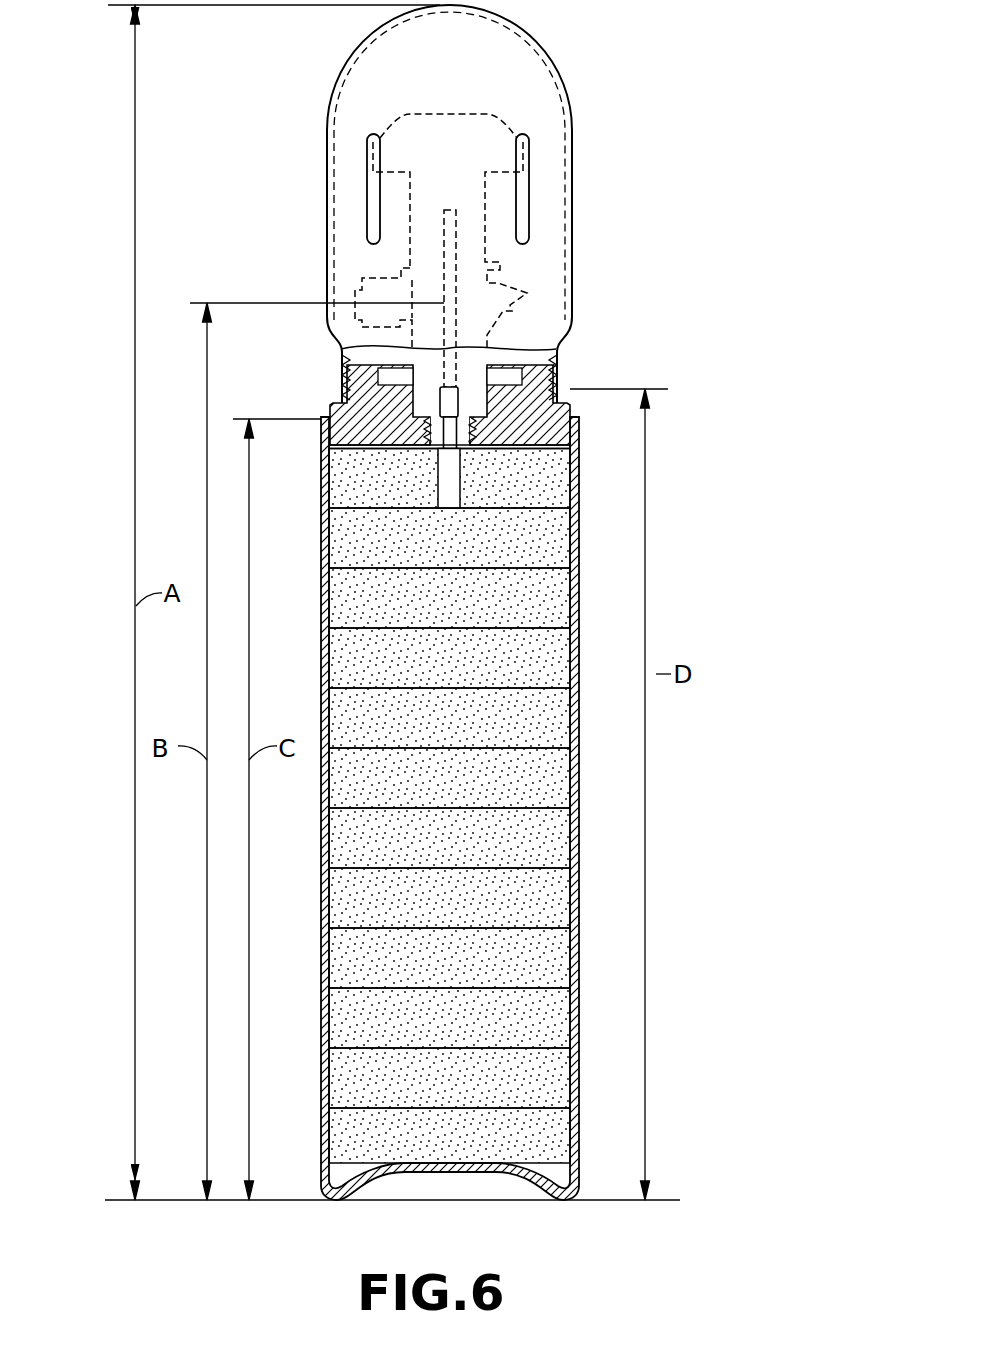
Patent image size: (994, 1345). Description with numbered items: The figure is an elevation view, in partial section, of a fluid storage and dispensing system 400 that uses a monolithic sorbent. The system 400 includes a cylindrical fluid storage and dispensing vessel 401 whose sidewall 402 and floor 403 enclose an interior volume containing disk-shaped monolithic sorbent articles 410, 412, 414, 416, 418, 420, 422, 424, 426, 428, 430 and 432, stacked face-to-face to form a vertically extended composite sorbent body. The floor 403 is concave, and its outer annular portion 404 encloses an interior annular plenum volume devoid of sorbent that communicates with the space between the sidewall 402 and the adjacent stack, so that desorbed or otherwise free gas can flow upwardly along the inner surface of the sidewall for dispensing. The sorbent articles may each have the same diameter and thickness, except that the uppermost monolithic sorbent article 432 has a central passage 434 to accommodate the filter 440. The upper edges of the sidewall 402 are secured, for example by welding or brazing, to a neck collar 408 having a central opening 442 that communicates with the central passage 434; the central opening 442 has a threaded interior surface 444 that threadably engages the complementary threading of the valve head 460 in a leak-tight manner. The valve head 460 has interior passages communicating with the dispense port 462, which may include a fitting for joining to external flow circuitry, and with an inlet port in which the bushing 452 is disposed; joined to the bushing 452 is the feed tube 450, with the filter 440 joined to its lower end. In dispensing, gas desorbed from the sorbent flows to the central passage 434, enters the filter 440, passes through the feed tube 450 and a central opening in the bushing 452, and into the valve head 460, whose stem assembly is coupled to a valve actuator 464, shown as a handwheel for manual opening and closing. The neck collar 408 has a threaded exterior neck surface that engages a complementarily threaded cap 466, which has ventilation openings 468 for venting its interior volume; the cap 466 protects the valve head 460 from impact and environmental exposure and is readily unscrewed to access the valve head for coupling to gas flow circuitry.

The fluid storage and dispensing system 400 is at (690, 182).
The fluid storage and dispensing vessel 401 is at (323, 1082).
The sidewall 402 is at (323, 693).
The floor 403 is at (427, 1170).
The outer annular portion 404 is at (572, 1192).
The neck collar 408 is at (346, 432).
The disk-shaped monolithic sorbent article 410 is at (442, 1150).
The disk-shaped monolithic sorbent article 412 is at (442, 1094).
The disk-shaped monolithic sorbent article 414 is at (442, 1034).
The disk-shaped monolithic sorbent article 416 is at (442, 974).
The disk-shaped monolithic sorbent article 418 is at (442, 914).
The disk-shaped monolithic sorbent article 420 is at (442, 854).
The disk-shaped monolithic sorbent article 422 is at (442, 794).
The disk-shaped monolithic sorbent article 424 is at (442, 734).
The disk-shaped monolithic sorbent article 426 is at (442, 674).
The disk-shaped monolithic sorbent article 428 is at (442, 614).
The disk-shaped monolithic sorbent article 430 is at (442, 554).
The uppermost monolithic sorbent article 432 is at (504, 497).
The central passage 434 is at (448, 500).
The filter 440 is at (493, 452).
The central opening 442 is at (549, 389).
The threaded interior surface 444 is at (350, 380).
The feed tube 450 is at (505, 372).
The bushing 452 is at (457, 393).
The valve head 460 is at (414, 215).
The dispense port 462 is at (382, 292).
The valve actuator 464 is at (460, 132).
The cap 466 is at (572, 122).
The ventilation openings 468 is at (523, 203).